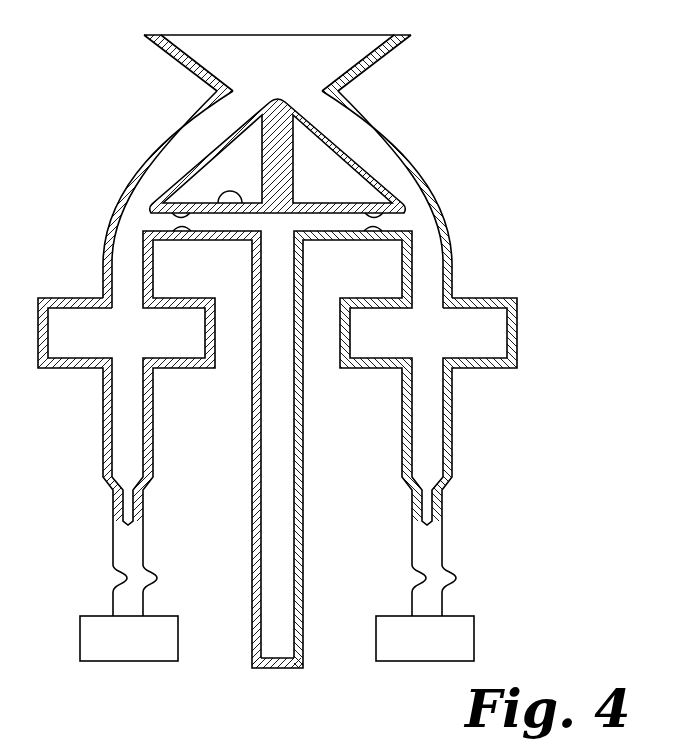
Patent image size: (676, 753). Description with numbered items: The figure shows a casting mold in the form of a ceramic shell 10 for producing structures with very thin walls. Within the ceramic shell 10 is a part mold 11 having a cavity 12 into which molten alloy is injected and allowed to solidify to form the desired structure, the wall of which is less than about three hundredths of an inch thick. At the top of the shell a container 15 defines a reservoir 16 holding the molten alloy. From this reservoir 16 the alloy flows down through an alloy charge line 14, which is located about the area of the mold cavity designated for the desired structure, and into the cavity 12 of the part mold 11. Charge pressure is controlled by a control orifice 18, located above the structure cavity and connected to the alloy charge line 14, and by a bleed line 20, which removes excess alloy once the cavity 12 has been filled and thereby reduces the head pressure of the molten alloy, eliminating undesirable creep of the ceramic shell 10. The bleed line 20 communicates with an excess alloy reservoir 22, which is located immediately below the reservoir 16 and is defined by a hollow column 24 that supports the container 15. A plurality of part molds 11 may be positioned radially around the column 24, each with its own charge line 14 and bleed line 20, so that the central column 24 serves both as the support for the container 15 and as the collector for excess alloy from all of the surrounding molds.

The ceramic shell 10 is at (370, 80).
The part mold 11 is at (102, 388).
The cavity 12 is at (135, 447).
The alloy charge line 14 is at (137, 199).
The container 15 is at (363, 58).
The reservoir 16 is at (253, 67).
The control orifice 18 is at (158, 217).
The bleed line 20 is at (221, 205).
The excess alloy reservoir 22 is at (266, 591).
The hollow column 24 is at (302, 470).